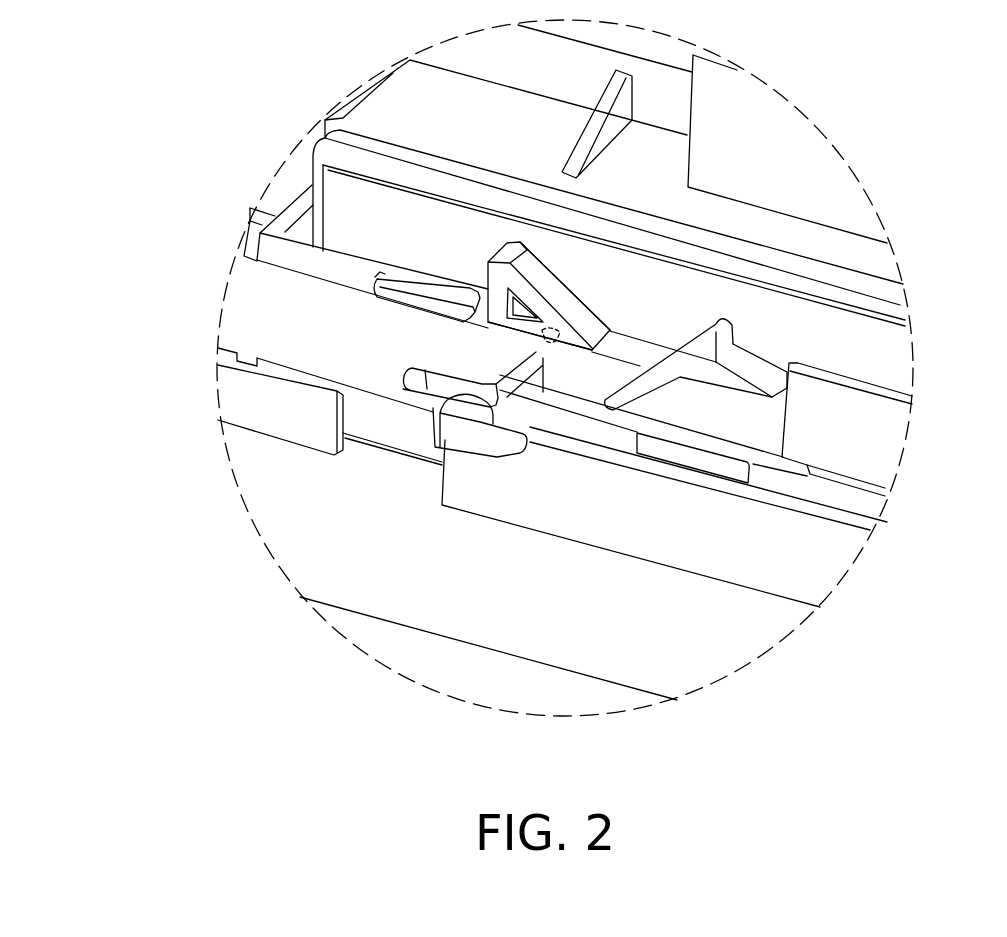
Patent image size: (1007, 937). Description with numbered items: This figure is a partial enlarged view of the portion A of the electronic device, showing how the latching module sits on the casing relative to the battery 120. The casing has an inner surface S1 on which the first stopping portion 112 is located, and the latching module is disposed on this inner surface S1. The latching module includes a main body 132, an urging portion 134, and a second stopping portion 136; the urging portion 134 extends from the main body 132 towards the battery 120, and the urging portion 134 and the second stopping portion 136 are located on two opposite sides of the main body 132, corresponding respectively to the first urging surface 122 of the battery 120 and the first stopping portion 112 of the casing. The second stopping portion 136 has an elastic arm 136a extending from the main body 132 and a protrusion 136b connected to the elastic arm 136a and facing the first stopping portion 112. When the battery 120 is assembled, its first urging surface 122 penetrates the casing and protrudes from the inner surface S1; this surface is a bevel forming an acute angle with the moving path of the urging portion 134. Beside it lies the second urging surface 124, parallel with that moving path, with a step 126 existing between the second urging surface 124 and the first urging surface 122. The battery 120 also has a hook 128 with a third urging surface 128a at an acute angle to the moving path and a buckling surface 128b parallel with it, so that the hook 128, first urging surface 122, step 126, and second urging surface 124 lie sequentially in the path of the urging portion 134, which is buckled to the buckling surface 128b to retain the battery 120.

The portion A is at (853, 172).
The first stopping portion 112 is at (470, 410).
The battery 120 is at (737, 346).
The first urging surface 122 is at (653, 353).
The second urging surface 124 is at (782, 354).
The step 126 is at (780, 335).
The hook 128 is at (498, 273).
The third urging surface 128a is at (565, 282).
The buckling surface 128b is at (586, 362).
The main body 132 is at (243, 312).
The urging portion 134 is at (549, 345).
The second stopping portion 136 is at (143, 378).
The elastic arm 136a is at (413, 395).
The protrusion 136b is at (443, 413).
The inner surface S1 is at (727, 647).